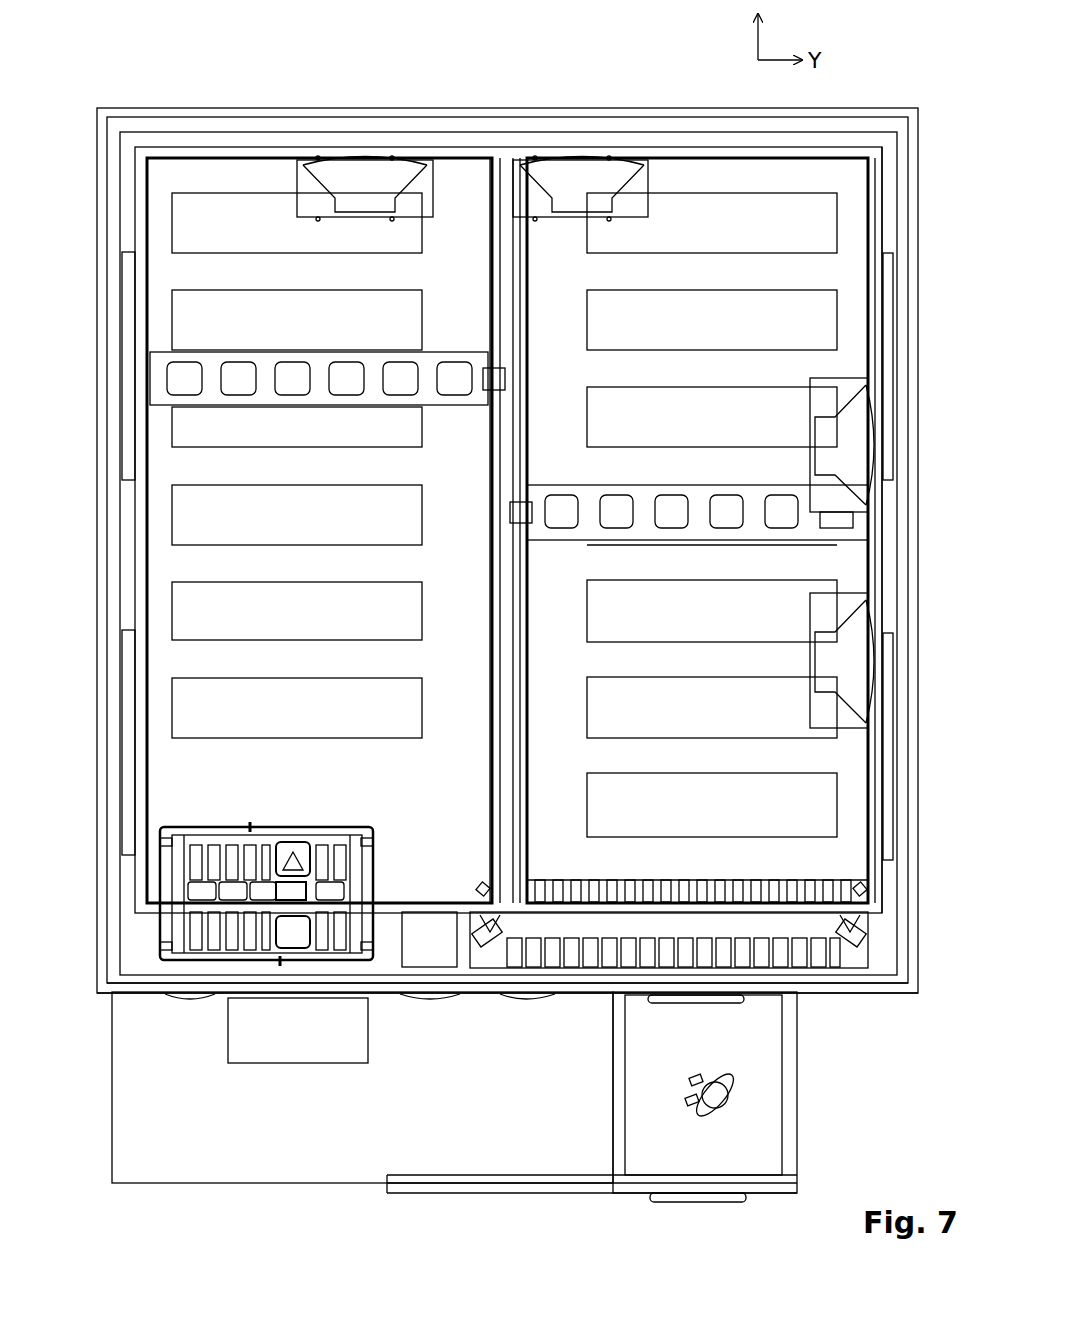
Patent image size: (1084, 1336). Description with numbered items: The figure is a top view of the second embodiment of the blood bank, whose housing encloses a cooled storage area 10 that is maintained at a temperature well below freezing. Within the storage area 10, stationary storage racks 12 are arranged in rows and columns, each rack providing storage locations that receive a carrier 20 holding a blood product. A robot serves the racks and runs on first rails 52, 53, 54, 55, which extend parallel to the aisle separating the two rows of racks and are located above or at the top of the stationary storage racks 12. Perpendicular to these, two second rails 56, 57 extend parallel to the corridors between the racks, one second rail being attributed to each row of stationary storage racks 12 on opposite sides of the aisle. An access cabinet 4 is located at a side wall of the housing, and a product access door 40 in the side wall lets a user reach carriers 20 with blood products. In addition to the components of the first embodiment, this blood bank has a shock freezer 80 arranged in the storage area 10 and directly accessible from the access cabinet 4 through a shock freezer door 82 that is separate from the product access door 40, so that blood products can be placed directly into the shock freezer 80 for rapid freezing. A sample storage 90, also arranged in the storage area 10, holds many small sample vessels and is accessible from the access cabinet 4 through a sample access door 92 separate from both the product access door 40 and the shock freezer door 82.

The access cabinet 4 is at (592, 1137).
The storage area 10 is at (498, 526).
The stationary storage racks 12 is at (520, 448).
The carrier 20 is at (713, 985).
The product access door 40 is at (362, 1123).
The first rail 52 is at (479, 516).
The first rail 53 is at (475, 482).
The first rail 54 is at (541, 477).
The first rail 55 is at (900, 495).
The second rail 56 is at (273, 307).
The second rail 57 is at (738, 479).
The shock freezer 80 is at (507, 1118).
The shock freezer door 82 is at (401, 1083).
The sample storage 90 is at (266, 1023).
The sample access door 92 is at (335, 1124).